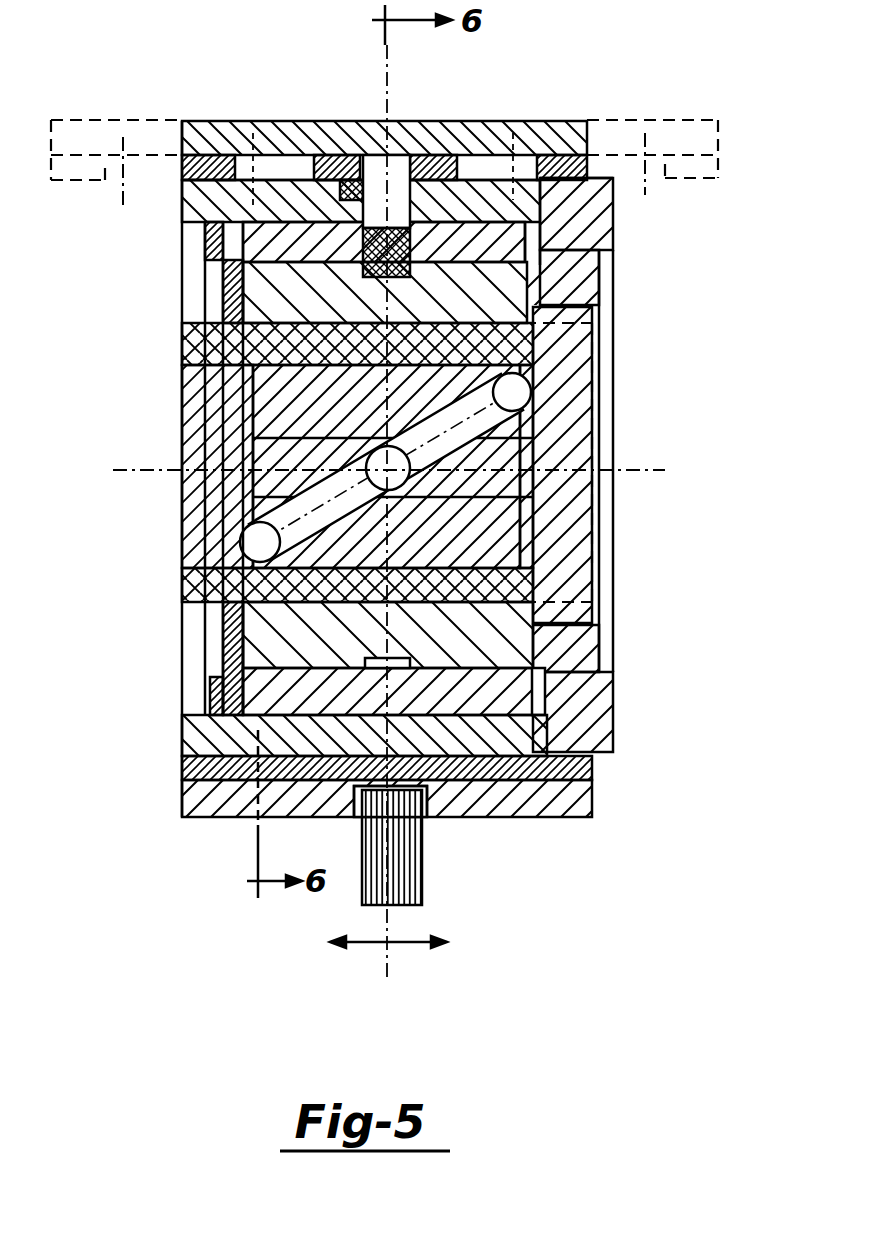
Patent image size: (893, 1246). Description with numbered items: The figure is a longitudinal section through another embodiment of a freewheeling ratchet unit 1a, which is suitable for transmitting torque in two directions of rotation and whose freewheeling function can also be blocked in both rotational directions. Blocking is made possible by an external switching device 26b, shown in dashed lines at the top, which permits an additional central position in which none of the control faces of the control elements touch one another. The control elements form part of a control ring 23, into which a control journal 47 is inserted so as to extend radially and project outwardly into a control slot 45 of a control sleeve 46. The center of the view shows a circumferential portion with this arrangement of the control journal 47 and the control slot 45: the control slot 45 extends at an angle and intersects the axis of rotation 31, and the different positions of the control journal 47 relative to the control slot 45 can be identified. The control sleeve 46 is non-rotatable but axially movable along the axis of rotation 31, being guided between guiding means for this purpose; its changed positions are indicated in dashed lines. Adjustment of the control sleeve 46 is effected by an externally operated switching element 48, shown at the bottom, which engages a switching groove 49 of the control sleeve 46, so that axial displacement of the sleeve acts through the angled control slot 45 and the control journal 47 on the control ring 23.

The control sleeve 46 is at (569, 121).
The control ring 23 is at (422, 178).
The freewheeling ratchet unit 1a is at (690, 86).
The external switching device 26b is at (738, 163).
The control journal 47 is at (372, 455).
The control slot 45 is at (520, 435).
The axis of rotation 31 is at (610, 465).
The switching groove 49 is at (365, 830).
The switching element 48 is at (408, 871).